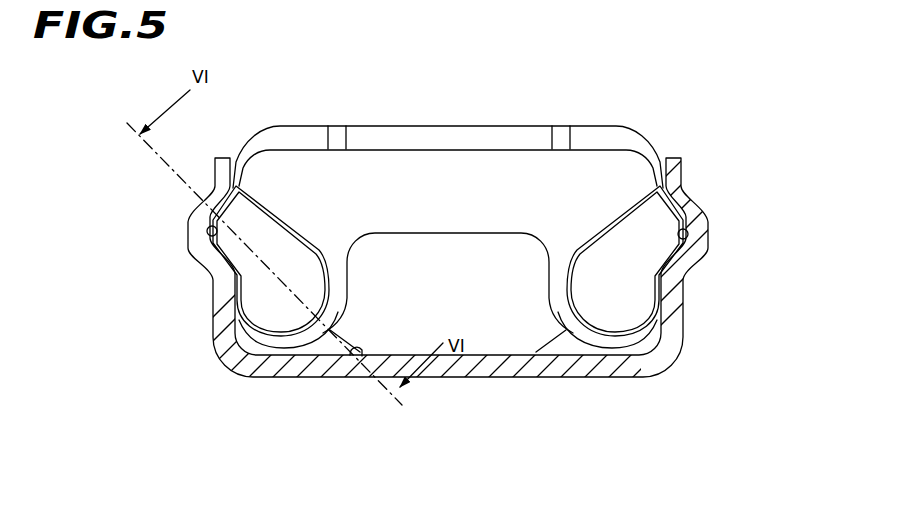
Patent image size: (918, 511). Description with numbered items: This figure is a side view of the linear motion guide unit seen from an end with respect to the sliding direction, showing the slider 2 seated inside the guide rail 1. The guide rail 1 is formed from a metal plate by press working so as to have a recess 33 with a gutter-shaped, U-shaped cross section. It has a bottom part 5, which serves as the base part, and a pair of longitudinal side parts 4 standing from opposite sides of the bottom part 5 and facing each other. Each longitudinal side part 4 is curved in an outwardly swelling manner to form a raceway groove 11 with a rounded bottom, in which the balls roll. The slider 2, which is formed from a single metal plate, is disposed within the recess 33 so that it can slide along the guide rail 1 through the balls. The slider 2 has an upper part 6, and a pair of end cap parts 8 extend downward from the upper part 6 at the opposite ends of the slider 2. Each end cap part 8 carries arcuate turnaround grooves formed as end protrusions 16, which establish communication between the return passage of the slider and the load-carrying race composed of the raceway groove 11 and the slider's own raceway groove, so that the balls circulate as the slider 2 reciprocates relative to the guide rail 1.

The guide rail 1 is at (590, 370).
The slider 2 is at (483, 130).
The longitudinal side part 4 is at (222, 277).
The bottom part 5 is at (475, 369).
The upper part 6 is at (387, 138).
The end cap part 8 is at (432, 184).
The raceway groove 11 is at (207, 236).
The end protrusion 16 is at (262, 302).
The recess 33 is at (360, 358).